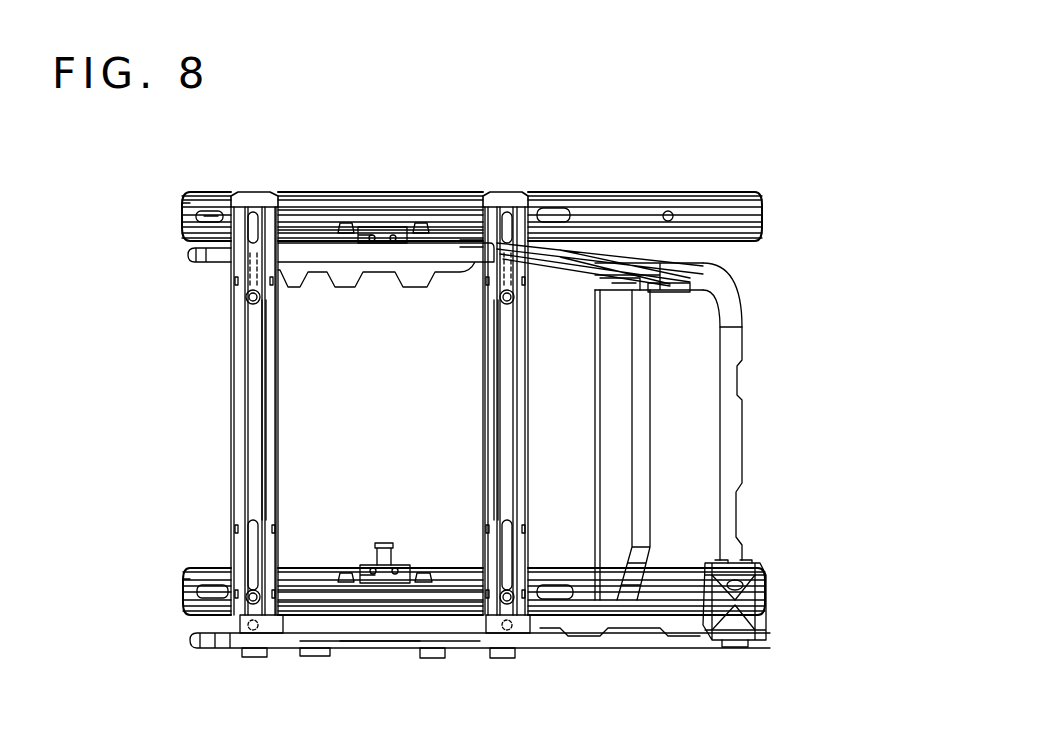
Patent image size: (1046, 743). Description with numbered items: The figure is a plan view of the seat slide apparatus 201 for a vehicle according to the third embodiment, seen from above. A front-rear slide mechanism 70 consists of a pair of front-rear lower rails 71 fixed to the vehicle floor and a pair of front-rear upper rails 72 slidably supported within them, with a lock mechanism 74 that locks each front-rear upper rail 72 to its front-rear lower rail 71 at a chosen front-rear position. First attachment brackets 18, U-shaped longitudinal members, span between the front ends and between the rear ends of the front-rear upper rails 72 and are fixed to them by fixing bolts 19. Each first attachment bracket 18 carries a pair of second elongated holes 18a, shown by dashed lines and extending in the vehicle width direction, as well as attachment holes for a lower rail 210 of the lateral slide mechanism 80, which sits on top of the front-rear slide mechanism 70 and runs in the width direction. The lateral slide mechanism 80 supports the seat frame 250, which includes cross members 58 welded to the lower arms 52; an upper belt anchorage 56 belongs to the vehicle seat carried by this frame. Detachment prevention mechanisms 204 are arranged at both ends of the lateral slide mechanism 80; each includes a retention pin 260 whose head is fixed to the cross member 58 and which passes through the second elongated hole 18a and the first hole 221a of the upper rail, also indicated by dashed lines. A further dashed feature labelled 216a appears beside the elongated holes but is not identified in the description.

The seat frame 250 is at (655, 155).
The fixing bolt 19 is at (241, 207).
The front-rear slide mechanism 70 is at (263, 177).
The front-rear lower rail 71 is at (185, 242).
The front-rear upper rail 72 is at (320, 222).
The lock mechanism 74 is at (383, 237).
The lower arm 52 is at (362, 260).
The detachment prevention mechanism 204 is at (222, 332).
The retention pin 260 is at (258, 302).
The first hole 221a is at (263, 298).
The second elongated hole 18a is at (233, 280).
The engagement portion 216a is at (230, 300).
The cross member 58 is at (263, 370).
The first attachment bracket 18 is at (280, 413).
The lower rail 210 is at (268, 443).
The seat slide apparatus 201 is at (367, 677).
The lateral slide mechanism 80 is at (417, 672).
The upper belt anchorage 56 is at (723, 623).